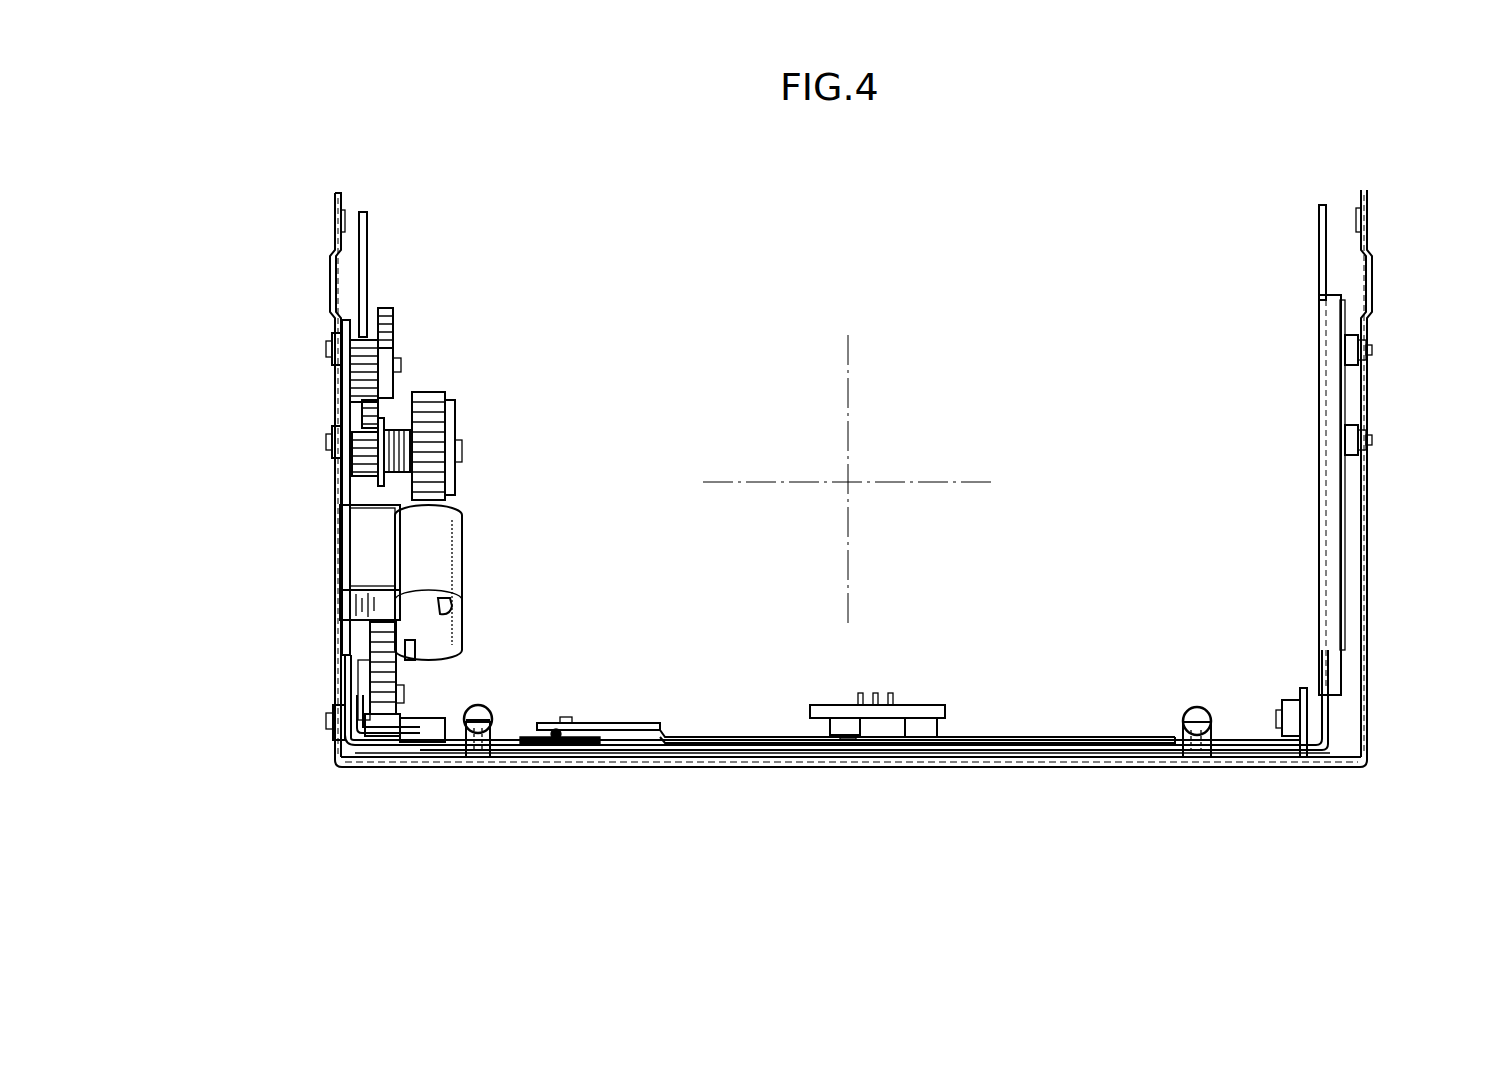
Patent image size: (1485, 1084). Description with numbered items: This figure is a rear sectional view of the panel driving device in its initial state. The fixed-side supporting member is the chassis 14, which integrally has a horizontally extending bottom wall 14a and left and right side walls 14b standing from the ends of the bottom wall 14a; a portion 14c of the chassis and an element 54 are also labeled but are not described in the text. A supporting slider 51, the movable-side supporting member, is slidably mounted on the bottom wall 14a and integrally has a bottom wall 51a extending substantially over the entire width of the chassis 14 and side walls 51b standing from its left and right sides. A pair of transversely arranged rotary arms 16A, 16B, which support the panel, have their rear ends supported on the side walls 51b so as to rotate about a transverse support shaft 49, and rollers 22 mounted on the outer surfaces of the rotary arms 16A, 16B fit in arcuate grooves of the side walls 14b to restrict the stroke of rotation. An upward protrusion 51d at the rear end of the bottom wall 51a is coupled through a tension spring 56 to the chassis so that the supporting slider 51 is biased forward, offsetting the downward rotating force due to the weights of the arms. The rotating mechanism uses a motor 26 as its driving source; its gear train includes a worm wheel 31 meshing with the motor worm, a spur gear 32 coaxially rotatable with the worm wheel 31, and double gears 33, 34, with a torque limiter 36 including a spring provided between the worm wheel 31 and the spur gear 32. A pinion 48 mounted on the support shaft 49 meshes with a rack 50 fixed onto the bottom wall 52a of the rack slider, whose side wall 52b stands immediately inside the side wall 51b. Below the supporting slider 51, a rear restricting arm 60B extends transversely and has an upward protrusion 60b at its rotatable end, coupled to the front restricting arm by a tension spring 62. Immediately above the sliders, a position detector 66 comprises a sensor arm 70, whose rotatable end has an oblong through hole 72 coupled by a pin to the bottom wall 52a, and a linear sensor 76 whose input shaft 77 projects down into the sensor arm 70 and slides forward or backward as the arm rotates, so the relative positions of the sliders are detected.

The chassis 14 is at (847, 508).
The bottom wall 14a is at (1015, 768).
The side walls 14b is at (335, 588).
The bracket of chassis 14c is at (1298, 700).
The rotary arm 16A is at (368, 212).
The rotary arm 16B is at (1318, 252).
The rollers 22 is at (1348, 445).
The motor 26 is at (455, 555).
The worm wheel 31 is at (448, 420).
The spur gear 32 is at (352, 455).
The double gear 33 is at (355, 395).
The double gear 34 is at (386, 308).
The torque limiter 36 is at (397, 428).
The pinion 48 is at (372, 640).
The support shaft 49 is at (365, 690).
The rack 50 is at (385, 740).
The supporting slider 51 is at (1242, 732).
The bottom wall 51a is at (620, 757).
The side walls 51b is at (346, 670).
The protrusion 51d is at (1196, 757).
The bottom wall 52a is at (425, 718).
The side wall 52b is at (357, 705).
The screw 54 is at (335, 730).
The tension spring 56 is at (1192, 707).
The protrusion 60b is at (478, 757).
The rear restricting arm 60B is at (755, 767).
The tension spring 62 is at (484, 705).
The position detector 66 is at (985, 720).
The sensor arm 70 is at (722, 737).
The through hole 72 is at (575, 717).
The linear sensor 76 is at (918, 690).
The input shaft 77 is at (848, 735).